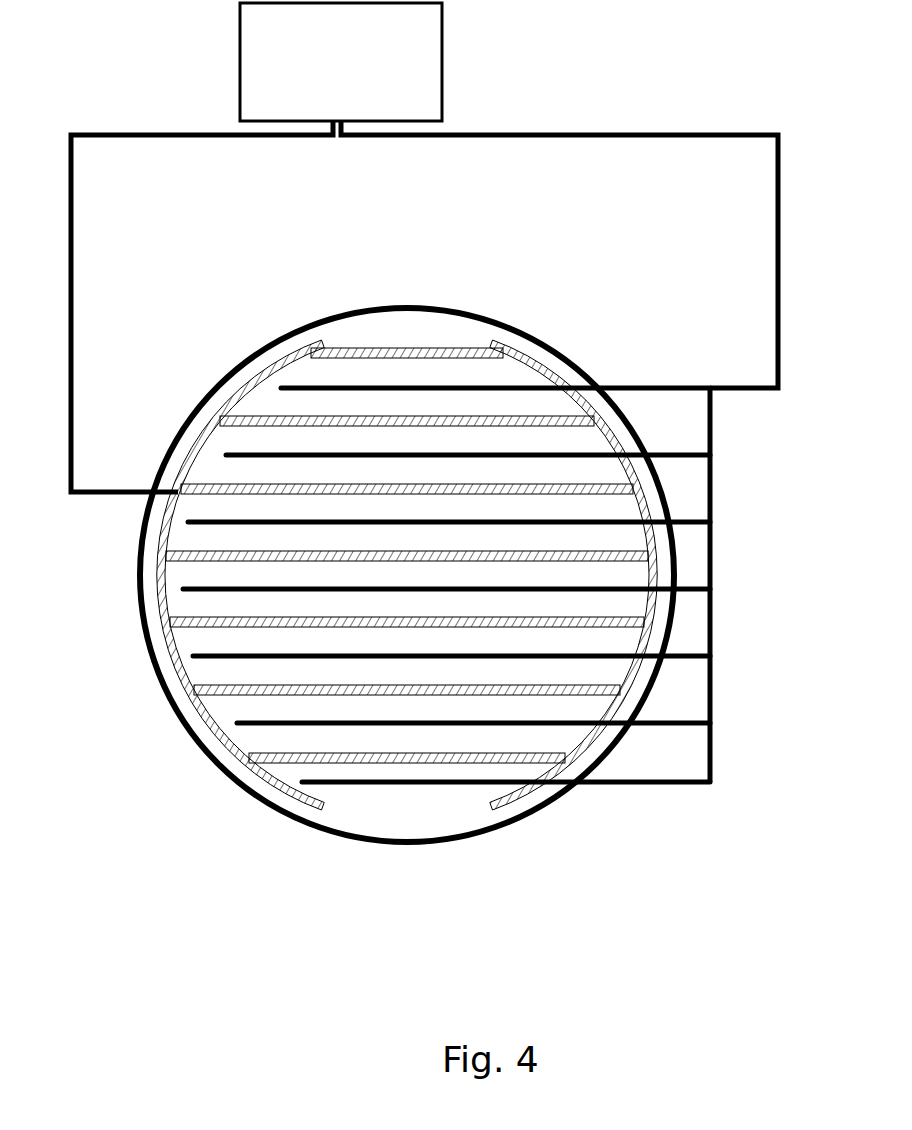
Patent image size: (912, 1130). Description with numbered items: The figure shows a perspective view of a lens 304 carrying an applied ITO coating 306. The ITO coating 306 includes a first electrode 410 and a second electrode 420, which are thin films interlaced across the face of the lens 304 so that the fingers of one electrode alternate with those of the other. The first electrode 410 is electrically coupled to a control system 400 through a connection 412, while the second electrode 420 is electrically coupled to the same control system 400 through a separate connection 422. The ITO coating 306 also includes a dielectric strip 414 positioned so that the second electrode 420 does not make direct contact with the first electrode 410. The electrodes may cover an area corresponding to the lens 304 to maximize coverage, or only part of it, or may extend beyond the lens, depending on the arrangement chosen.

The control system 400 is at (323, 85).
The lens 304 is at (408, 305).
The ITO coating 306 is at (220, 295).
The first electrode 410 is at (338, 353).
The dielectric strip 414 is at (543, 372).
The connection 412 is at (112, 500).
The connection 422 is at (740, 390).
The second electrode 420 is at (613, 784).